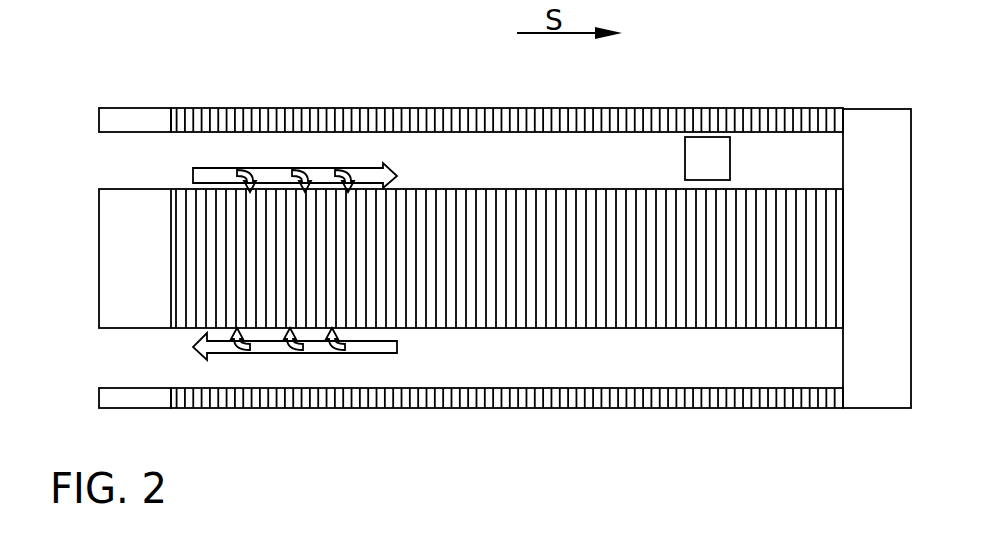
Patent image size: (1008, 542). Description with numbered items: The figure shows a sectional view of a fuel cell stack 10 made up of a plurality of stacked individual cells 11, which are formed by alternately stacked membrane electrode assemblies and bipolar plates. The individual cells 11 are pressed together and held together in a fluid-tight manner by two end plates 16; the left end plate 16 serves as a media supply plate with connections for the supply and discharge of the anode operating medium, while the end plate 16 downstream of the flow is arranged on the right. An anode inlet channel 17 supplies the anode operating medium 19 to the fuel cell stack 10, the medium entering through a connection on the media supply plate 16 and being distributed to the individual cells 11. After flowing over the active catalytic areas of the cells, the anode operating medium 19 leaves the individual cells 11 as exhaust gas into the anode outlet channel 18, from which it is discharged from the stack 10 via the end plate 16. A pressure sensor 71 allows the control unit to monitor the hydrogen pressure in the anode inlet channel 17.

The fuel cell stack 10 is at (302, 80).
The individual cell 11 is at (483, 120).
The end plate 16 is at (130, 118).
The anode inlet channel 17 is at (585, 170).
The anode outlet channel 18 is at (598, 368).
The anode operating medium 19 is at (218, 172).
The pressure sensor 71 is at (707, 158).